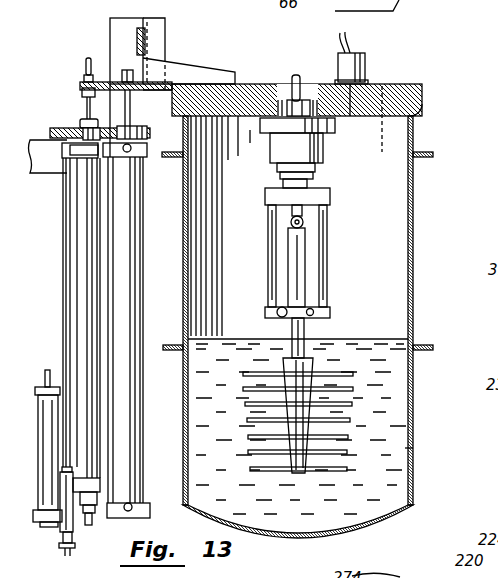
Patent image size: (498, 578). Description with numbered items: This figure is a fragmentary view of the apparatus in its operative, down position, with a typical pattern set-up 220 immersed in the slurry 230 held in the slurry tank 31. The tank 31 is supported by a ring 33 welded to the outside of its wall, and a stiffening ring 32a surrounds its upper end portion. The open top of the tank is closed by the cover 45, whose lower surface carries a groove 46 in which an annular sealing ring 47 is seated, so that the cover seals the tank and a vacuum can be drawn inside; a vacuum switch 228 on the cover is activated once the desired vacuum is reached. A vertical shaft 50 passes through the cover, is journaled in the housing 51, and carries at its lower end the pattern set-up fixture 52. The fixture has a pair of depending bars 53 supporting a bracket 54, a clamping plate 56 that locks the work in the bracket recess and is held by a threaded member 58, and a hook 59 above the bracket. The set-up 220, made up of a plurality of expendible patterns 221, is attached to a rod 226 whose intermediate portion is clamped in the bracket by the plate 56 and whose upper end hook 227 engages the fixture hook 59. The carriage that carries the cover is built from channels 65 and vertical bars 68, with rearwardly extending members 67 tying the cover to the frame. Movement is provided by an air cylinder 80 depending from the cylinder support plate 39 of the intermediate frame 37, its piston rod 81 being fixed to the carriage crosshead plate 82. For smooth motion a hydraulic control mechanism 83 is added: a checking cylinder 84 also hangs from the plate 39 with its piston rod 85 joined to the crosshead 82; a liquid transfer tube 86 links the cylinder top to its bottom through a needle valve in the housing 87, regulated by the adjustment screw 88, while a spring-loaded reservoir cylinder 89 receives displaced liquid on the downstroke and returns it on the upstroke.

The slurry tank 31 is at (412, 235).
The stiffening ring 32a is at (425, 148).
The ring 33 is at (420, 345).
The intermediate frame construction 37 is at (42, 140).
The cylinder support plate 39 is at (60, 128).
The cover 45 is at (380, 84).
The groove 46 is at (374, 127).
The annular sealing ring 47 is at (418, 108).
The vertical shaft 50 is at (290, 82).
The housing 51 is at (323, 140).
The pattern set-up clamp or fixture 52 is at (333, 223).
The depending bars 53 is at (272, 252).
The bracket 54 is at (332, 310).
The clamping plate 56 is at (293, 308).
The threaded member 58 is at (277, 318).
The hook 59 is at (290, 208).
The channels 65 is at (112, 25).
The rearwardly extending members 67 is at (185, 68).
The vertical bars 68 is at (162, 35).
The air cylinder 80 is at (142, 268).
The piston rod 81 is at (133, 115).
The carriage crosshead plate 82 is at (101, 82).
The hydraulic control mechanism 83 is at (60, 238).
The checking cylinder 84 is at (83, 323).
The piston rod 85 is at (85, 100).
The liquid transfer tube 86 is at (68, 287).
The housing 87 is at (77, 523).
The adjustment screw 88 is at (70, 548).
The spring-loaded reservoir cylinder 89 is at (37, 405).
The pattern set-up 220 is at (271, 362).
The expendible patterns 221 is at (348, 447).
The rod 226 is at (306, 328).
The hook 227 is at (290, 221).
The vacuum switch 228 is at (337, 66).
The slurry 230 is at (384, 448).